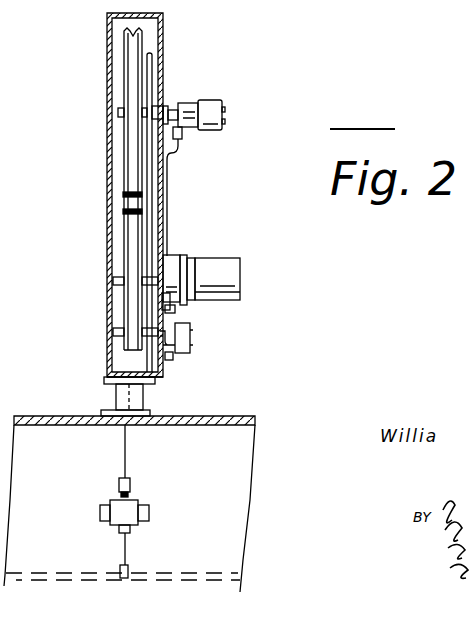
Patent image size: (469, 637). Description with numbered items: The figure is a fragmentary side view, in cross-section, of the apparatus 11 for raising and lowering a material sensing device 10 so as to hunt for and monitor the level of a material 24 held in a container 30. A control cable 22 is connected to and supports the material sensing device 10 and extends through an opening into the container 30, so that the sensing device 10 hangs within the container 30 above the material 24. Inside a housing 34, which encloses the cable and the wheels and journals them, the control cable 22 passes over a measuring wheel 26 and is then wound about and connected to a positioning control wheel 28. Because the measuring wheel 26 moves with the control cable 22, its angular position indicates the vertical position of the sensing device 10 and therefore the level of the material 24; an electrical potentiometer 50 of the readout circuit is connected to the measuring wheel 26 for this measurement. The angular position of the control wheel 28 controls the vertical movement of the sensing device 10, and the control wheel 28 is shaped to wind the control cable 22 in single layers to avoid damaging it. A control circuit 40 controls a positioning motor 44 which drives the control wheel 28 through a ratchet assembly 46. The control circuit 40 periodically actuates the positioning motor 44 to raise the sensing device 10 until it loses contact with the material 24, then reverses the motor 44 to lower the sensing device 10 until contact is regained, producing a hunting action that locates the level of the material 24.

The material sensing device 10 is at (140, 501).
The apparatus 11 is at (104, 96).
The control cable 22 is at (128, 452).
The material 24 is at (195, 574).
The measuring wheel 26 is at (140, 44).
The positioning control wheel 28 is at (122, 220).
The container 30 is at (240, 418).
The housing 34 is at (108, 137).
The control circuit 40 is at (180, 256).
The positioning motor 44 is at (222, 266).
The ratchet assembly 46 is at (200, 258).
The electrical potentiometer 50 is at (220, 108).